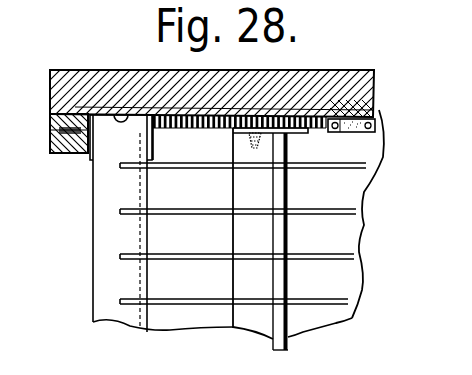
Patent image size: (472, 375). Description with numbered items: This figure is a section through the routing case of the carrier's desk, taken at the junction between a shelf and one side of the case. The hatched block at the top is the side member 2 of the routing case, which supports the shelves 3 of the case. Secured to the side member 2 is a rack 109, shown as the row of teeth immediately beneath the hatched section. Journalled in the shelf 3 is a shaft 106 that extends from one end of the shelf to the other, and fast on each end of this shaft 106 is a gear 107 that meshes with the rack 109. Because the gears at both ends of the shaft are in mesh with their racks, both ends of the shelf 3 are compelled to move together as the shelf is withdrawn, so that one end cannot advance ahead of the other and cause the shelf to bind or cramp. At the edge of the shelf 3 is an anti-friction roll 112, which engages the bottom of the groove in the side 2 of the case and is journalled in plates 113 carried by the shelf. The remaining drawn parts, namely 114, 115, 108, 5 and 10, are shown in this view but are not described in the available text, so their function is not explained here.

The side member 2 is at (135, 81).
The partition wall 114 is at (78, 113).
The lower housing block 115 is at (63, 147).
The rack 109 is at (202, 117).
The gear 107 is at (291, 117).
The plate with screw 108 is at (302, 136).
The anti-friction roll 112 is at (346, 132).
The plates 113 is at (361, 133).
The shaft 106 is at (277, 225).
The horizontal bars 5 is at (203, 168).
The sliding bracket 10 is at (100, 285).
The shelf 3 is at (343, 236).